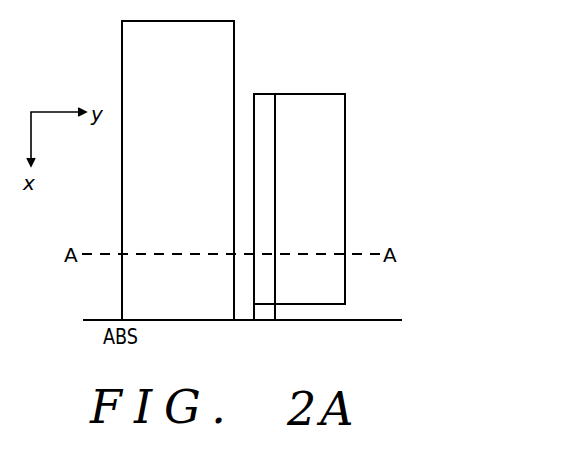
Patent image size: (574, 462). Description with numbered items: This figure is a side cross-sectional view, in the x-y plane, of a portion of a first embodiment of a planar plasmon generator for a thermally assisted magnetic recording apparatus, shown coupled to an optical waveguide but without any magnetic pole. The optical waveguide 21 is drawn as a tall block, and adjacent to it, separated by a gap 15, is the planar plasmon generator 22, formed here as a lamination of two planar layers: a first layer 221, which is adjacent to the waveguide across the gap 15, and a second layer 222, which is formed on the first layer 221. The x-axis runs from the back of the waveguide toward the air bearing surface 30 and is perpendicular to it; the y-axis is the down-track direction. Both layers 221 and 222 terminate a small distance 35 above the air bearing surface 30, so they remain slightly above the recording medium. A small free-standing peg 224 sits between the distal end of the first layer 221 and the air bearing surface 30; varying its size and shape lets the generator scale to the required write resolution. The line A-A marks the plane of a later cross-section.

The gap 15 is at (250, 108).
The optical waveguide 21 is at (133, 43).
The planar plasmon generator 22 is at (330, 201).
The layer 1 221 is at (267, 93).
The layer 2 222 is at (331, 94).
The peg 224 is at (272, 309).
The air bearing surface 30 is at (228, 321).
The small distance 35 is at (330, 310).